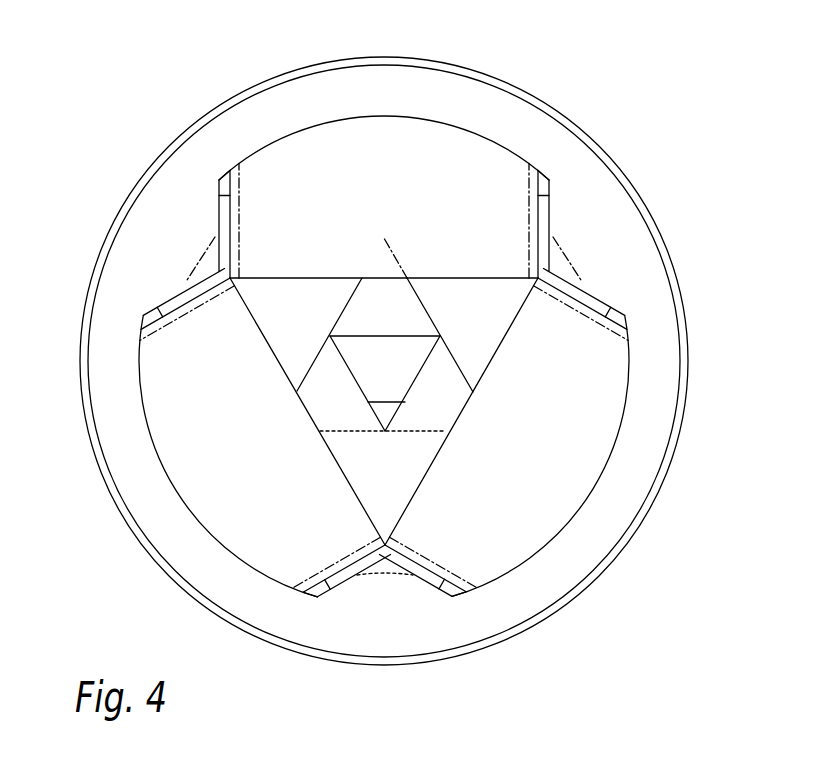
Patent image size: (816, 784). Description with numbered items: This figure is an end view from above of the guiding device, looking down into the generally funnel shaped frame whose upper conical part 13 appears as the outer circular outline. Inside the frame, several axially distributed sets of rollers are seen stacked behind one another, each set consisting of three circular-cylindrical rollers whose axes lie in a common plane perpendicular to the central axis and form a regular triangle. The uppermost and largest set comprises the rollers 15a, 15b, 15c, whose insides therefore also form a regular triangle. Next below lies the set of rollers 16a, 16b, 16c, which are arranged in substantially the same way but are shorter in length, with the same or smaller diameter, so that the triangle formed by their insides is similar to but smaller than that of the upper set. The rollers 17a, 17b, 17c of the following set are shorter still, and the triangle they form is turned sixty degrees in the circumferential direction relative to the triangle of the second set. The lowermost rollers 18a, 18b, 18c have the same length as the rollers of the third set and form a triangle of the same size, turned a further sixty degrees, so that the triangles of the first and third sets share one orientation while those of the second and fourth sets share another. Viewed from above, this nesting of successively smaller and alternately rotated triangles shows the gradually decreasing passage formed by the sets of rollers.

The upper conical part 13 is at (583, 568).
The roller 15a is at (187, 480).
The roller 15b is at (605, 437).
The roller 15c is at (450, 137).
The roller 16a is at (280, 320).
The roller 16b is at (365, 460).
The roller 16c is at (483, 320).
The roller 17a is at (300, 405).
The roller 17b is at (448, 398).
The roller 17c is at (385, 313).
The roller 18a is at (357, 350).
The roller 18b is at (387, 412).
The roller 18c is at (437, 343).